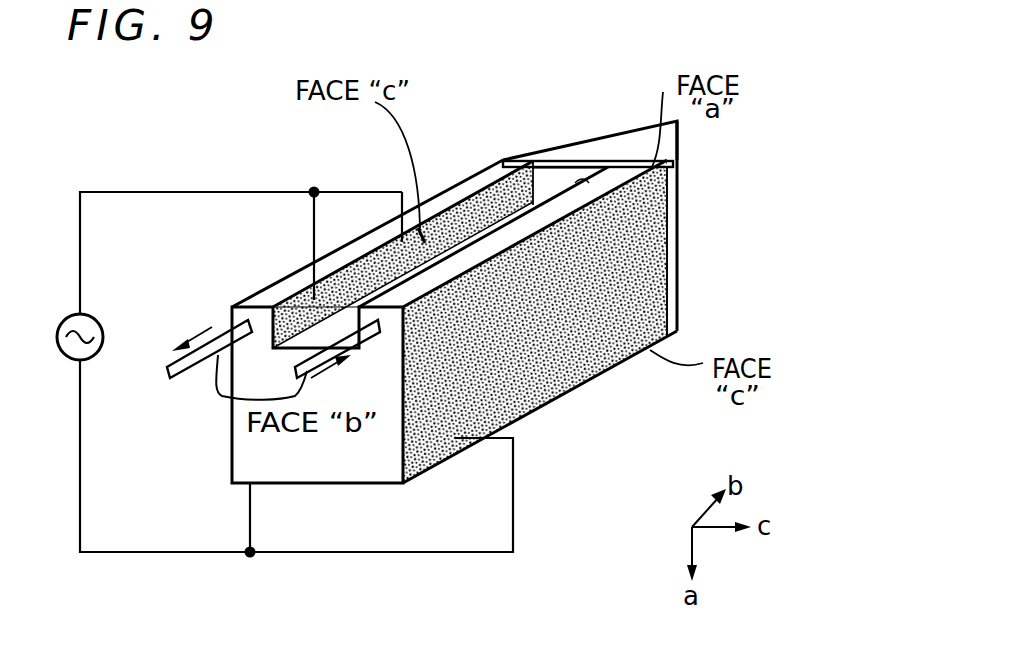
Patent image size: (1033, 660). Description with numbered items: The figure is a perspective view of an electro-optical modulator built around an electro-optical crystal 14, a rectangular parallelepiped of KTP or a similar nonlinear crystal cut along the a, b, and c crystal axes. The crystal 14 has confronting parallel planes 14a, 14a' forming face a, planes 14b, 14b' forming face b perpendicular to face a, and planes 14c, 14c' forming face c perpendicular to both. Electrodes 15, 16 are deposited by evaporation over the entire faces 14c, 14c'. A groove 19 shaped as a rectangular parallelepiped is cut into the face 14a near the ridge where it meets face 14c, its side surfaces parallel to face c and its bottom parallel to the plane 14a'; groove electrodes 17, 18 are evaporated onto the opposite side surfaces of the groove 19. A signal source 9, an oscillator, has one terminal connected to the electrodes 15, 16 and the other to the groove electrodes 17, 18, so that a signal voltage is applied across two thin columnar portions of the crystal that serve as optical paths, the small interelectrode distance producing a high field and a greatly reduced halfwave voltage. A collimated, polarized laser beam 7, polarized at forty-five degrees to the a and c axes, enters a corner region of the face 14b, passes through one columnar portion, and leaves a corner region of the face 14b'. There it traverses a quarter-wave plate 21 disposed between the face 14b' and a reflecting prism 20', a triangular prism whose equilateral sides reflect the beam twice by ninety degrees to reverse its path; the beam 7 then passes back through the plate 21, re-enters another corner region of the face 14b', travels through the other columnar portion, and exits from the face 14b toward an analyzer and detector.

The laser beam 7 is at (215, 352).
The signal source 9 is at (97, 313).
The electro-optical crystal 14 is at (620, 353).
The plane of face a 14a is at (382, 195).
The plane of face a 14a' is at (540, 415).
The plane of face b 14b is at (326, 419).
The plane of face b 14b' is at (722, 235).
The plane of face c 14c is at (540, 325).
The plane of face c 14c' is at (403, 236).
The electrode 15 is at (648, 290).
The electrode 16 is at (282, 273).
The groove electrode 17 is at (589, 183).
The groove electrode 18 is at (453, 210).
The groove 19 is at (557, 182).
The reflecting prism 20' is at (590, 99).
The quarter-wave plate 21 is at (670, 172).